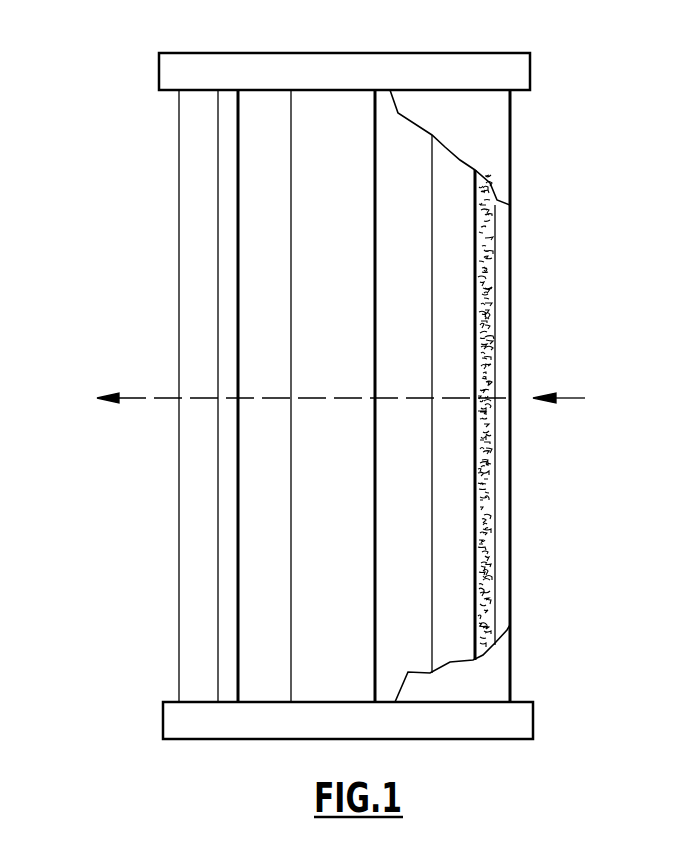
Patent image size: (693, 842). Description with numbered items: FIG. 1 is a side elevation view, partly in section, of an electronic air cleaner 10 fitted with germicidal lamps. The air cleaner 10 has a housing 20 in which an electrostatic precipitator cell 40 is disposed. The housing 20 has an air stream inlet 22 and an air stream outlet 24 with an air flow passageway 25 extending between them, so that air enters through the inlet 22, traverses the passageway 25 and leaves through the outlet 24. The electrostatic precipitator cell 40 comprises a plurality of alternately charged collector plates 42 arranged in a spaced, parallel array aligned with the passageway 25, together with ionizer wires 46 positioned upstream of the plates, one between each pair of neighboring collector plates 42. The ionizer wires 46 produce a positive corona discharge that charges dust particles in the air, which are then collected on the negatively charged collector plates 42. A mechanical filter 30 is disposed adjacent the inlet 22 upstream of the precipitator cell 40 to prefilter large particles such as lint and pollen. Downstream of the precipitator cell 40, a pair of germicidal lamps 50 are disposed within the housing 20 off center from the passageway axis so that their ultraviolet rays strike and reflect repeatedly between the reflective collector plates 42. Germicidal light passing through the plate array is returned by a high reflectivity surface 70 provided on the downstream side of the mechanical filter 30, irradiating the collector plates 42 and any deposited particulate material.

The electronic air cleaner 10 is at (578, 106).
The housing 20 is at (512, 672).
The air stream inlet 22 is at (512, 313).
The air stream outlet 24 is at (179, 307).
The air flow passageway 25 is at (249, 579).
The mechanical filter 30 is at (495, 250).
The electrostatic precipitator cell 40 is at (399, 128).
The collector plates 42 is at (346, 250).
The ionizer wires 46 is at (432, 487).
The germicidal lamp 50 is at (218, 205).
The high reflectivity surface 70 is at (478, 543).